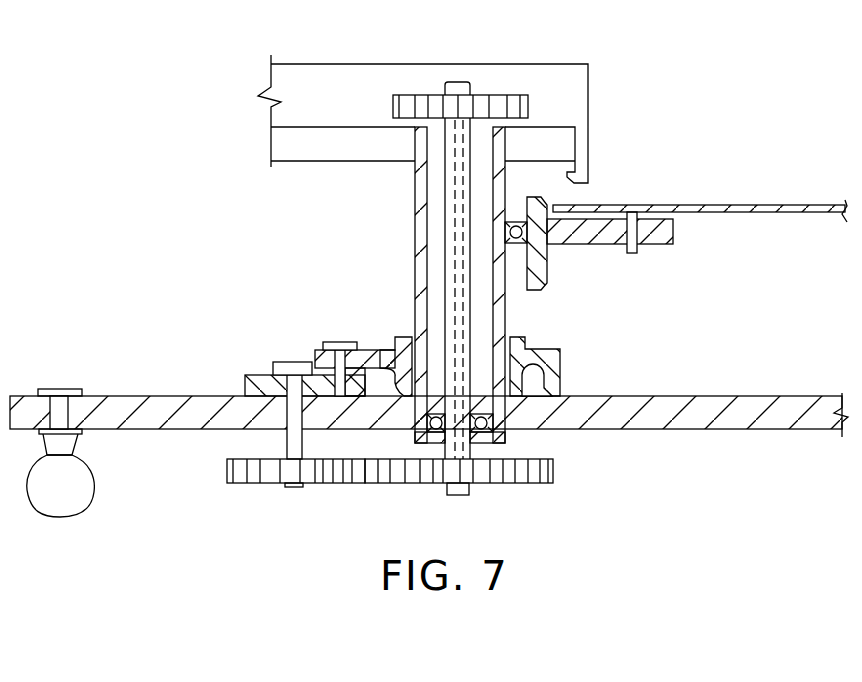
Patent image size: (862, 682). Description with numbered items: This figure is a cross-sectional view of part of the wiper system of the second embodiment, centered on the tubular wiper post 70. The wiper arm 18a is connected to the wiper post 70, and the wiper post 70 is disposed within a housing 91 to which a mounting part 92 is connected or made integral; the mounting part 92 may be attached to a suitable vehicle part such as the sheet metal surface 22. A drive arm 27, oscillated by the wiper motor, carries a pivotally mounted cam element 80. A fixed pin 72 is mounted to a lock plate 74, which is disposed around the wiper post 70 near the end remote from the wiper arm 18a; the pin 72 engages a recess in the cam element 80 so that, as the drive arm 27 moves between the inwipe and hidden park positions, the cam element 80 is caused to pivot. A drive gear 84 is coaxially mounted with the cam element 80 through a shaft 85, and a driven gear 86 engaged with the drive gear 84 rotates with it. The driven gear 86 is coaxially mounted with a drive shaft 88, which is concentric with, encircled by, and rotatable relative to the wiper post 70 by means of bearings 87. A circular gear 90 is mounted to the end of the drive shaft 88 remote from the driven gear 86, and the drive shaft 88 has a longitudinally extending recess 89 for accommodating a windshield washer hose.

The wiper arm 18a is at (314, 140).
The sheet metal surface 22 is at (776, 205).
The drive arm 27 is at (117, 408).
The wiper post 70 is at (421, 174).
The fixed pin 72 is at (338, 344).
The lock plate 74 is at (372, 352).
The cam element 80 is at (258, 380).
The drive gear 84 is at (270, 473).
The shaft 85 is at (298, 437).
The driven gear 86 is at (510, 472).
The bearings 87 is at (484, 433).
The drive shaft 88 is at (450, 447).
The longitudinally extending recess 89 is at (466, 497).
The circular gear 90 is at (505, 102).
The housing 91 is at (536, 262).
The mounting part 92 is at (659, 237).